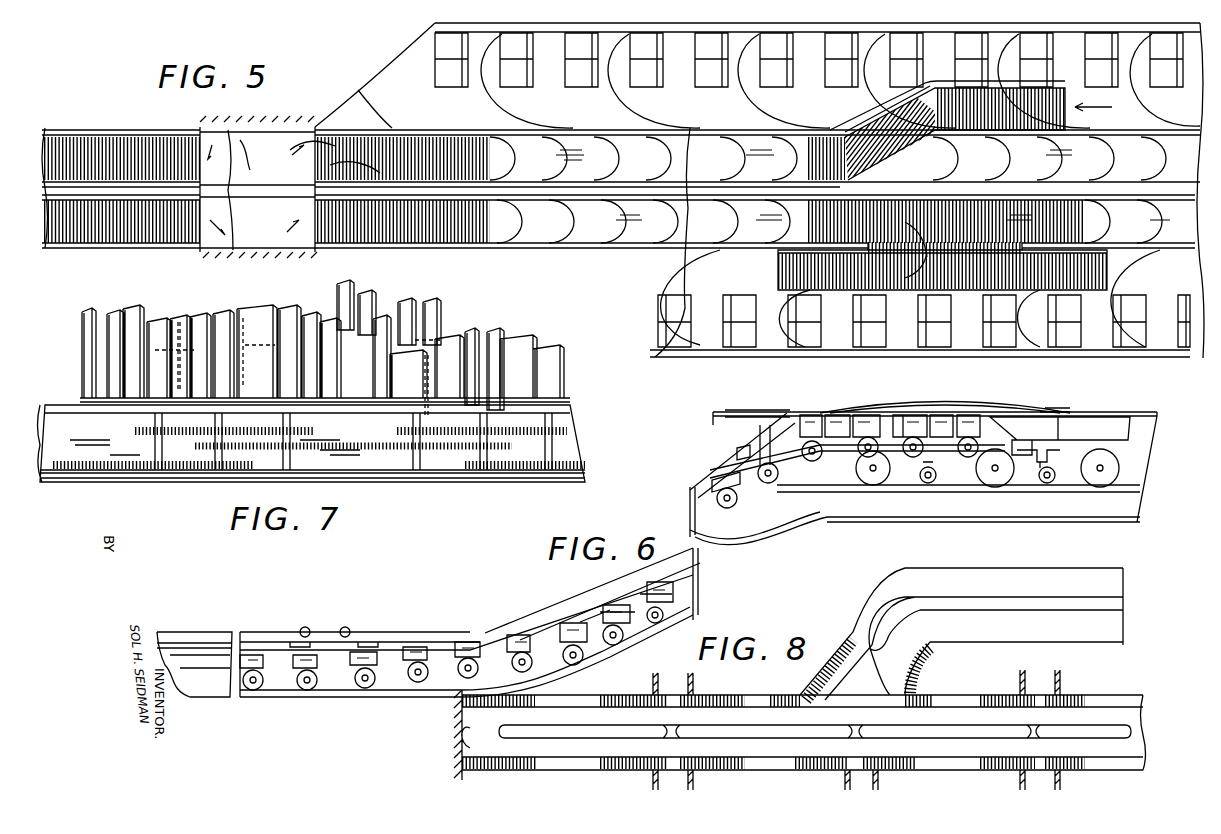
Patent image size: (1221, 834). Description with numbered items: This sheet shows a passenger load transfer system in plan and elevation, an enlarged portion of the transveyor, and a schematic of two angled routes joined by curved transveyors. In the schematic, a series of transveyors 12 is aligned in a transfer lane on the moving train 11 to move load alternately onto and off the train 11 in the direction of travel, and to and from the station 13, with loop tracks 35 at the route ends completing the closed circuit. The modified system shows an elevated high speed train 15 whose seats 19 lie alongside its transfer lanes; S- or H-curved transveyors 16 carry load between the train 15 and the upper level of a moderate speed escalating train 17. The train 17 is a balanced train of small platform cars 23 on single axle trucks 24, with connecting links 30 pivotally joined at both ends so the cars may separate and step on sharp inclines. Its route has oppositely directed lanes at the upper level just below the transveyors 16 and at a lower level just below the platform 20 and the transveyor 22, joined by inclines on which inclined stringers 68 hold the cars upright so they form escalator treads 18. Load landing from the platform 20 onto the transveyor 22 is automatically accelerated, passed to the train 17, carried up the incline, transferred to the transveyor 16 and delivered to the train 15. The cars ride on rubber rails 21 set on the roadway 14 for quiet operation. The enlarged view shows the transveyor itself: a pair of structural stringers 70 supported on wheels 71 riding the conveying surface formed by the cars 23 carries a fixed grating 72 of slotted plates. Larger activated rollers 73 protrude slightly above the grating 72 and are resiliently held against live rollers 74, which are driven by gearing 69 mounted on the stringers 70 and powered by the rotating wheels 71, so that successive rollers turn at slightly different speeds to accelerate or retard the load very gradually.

In FIG. 8, the train 11 is at (777, 772).
In FIG. 8, the transveyors 12 is at (600, 805).
In FIG. 8, the station 13 is at (1070, 690).
In FIG. 6, the roadway 14 is at (1140, 487).
In FIG. 5, the high speed train 15 is at (688, 280).
In FIG. 6, the high speed train 15 is at (1164, 443).
In FIG. 5, the transveyors 16 is at (1090, 220).
In FIG. 5, the escalating train 17 is at (1127, 152).
In FIG. 6, the escalator treads 18 is at (645, 577).
In FIG. 5, the seats 19 is at (1204, 268).
In FIG. 5, the platform 20 is at (274, 220).
In FIG. 6, the platform 20 is at (293, 633).
In FIG. 6, the rubber rails 21 is at (848, 453).
In FIG. 5, the transveyor 22 is at (476, 243).
In FIG. 5, the platform cars 23 is at (722, 164).
In FIG. 6, the platform cars 23 is at (530, 648).
In FIG. 6, the axle trucks 24 is at (618, 652).
In FIG. 6, the connecting link 30 is at (898, 416).
In FIG. 8, the loop tracks 35 is at (1070, 738).
In FIG. 6, the inclined stringers 68 is at (620, 608).
In FIG. 7, the gearing 69 is at (390, 428).
In FIG. 5, the structural stringers 70 is at (330, 160).
In FIG. 7, the structural stringers 70 is at (440, 477).
In FIG. 6, the structural stringers 70 is at (182, 632).
In FIG. 7, the wheels 71 is at (264, 316).
In FIG. 6, the wheels 71 is at (367, 643).
In FIG. 7, the fixed grating 72 is at (499, 340).
In FIG. 7, the activated rollers 73 is at (135, 316).
In FIG. 7, the live rollers 74 is at (445, 335).